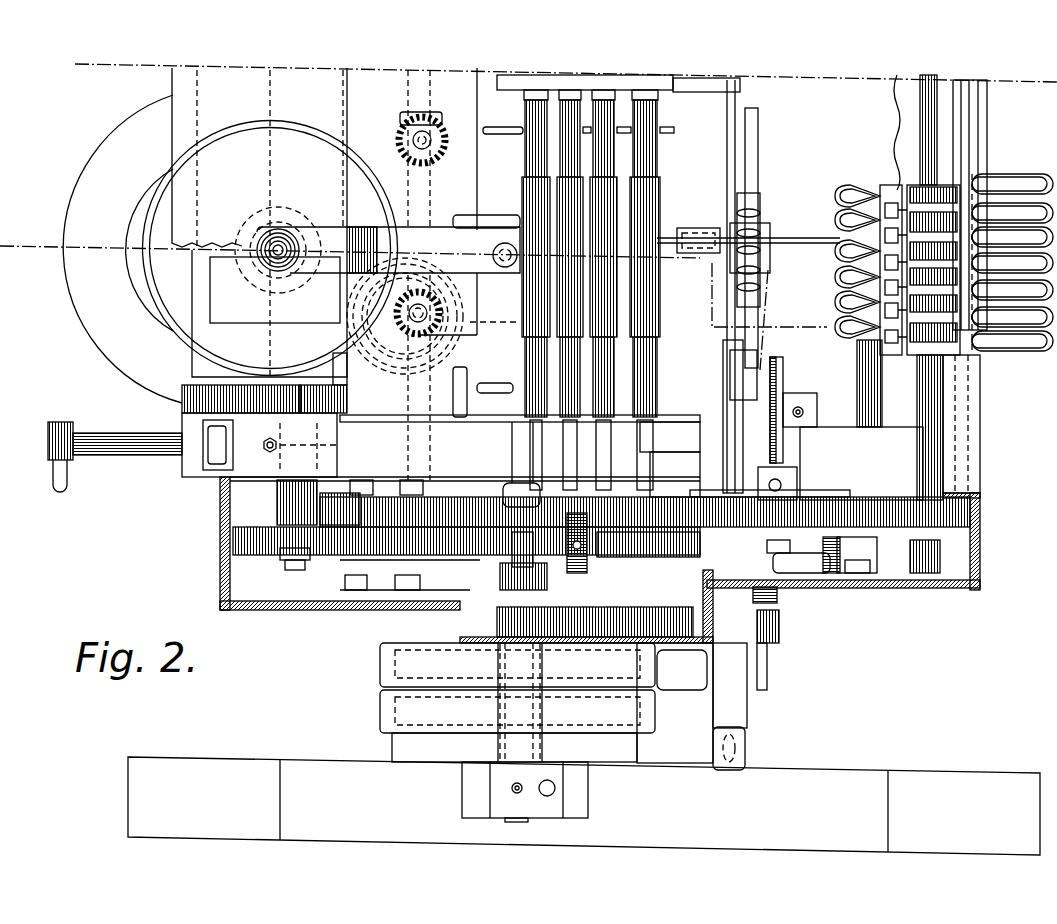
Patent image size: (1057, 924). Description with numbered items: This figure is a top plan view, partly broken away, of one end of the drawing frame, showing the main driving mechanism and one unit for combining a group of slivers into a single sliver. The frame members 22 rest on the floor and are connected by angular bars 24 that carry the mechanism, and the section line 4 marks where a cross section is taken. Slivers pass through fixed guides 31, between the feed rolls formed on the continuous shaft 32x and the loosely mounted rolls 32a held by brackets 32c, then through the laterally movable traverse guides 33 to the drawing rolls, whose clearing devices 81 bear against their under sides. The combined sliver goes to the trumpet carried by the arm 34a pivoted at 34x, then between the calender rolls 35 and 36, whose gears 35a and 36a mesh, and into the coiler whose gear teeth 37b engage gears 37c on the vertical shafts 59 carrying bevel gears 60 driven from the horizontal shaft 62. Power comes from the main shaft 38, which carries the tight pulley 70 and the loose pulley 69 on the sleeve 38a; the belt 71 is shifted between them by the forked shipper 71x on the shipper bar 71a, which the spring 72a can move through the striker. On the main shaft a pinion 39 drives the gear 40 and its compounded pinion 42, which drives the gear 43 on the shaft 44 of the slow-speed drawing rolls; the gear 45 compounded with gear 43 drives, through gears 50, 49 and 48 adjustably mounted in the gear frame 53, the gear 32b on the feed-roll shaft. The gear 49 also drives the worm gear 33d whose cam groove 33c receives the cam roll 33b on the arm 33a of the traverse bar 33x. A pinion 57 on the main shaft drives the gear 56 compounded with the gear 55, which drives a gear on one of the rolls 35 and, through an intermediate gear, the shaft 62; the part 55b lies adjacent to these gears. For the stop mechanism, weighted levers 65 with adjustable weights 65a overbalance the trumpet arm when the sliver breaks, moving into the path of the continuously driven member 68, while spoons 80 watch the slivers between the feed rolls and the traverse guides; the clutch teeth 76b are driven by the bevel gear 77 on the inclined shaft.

The machine frame 4 is at (1043, 362).
The frame members 22 is at (584, 806).
The bar 24 is at (678, 753).
The fixed guides 31 is at (1012, 260).
The feed rolls 32a is at (963, 193).
The gear 32b is at (953, 529).
The brackets 32c is at (1003, 241).
The shaft 32x is at (930, 120).
The traverse guides 33 is at (760, 204).
The arm 33a is at (737, 367).
The cam roll 33b is at (770, 255).
The cam groove 33c is at (785, 392).
The worm gear 33d is at (783, 352).
The traverse bar 33x is at (758, 132).
The arm 34a is at (323, 240).
The pivot 34x is at (470, 230).
The calender roll 35 is at (330, 367).
The gear 35a is at (340, 398).
The calender roll 36 is at (200, 281).
The gear 36a is at (210, 399).
The gear teeth 37b is at (157, 313).
The gears 37c is at (455, 350).
The main power shaft 38 is at (515, 822).
The sleeve 38a is at (497, 786).
The pinion 39 is at (497, 624).
The gear 40 is at (663, 648).
The pinion 42 is at (577, 546).
The gear 43 is at (657, 560).
The shaft 44 is at (650, 358).
The gear 45 is at (660, 490).
The gear 48 is at (860, 527).
The gear 49 is at (790, 520).
The gear 50 is at (697, 433).
The gear frame 53 is at (828, 510).
The gear 55 is at (333, 556).
The cross bar 55b is at (233, 539).
The gear 56 is at (388, 483).
The pinion 57 is at (500, 480).
The vertical shafts 59 is at (382, 302).
The bevel gears 60 is at (445, 322).
The horizontal shaft 62 is at (422, 178).
The weighted lever 65 is at (667, 247).
The adjustable weight 65a is at (692, 228).
The continuously driven member 68 is at (878, 381).
The loose pulley 69 is at (380, 706).
The tight pulley 70 is at (380, 661).
The driving belt 71 is at (662, 692).
The shipper bar 71a is at (745, 691).
The forked shipper 71x is at (760, 717).
The spring 72a is at (780, 599).
The teeth 76b is at (890, 572).
The bevel gear 77 is at (843, 572).
The spoons 80 is at (835, 198).
The clearing devices 81 is at (550, 265).